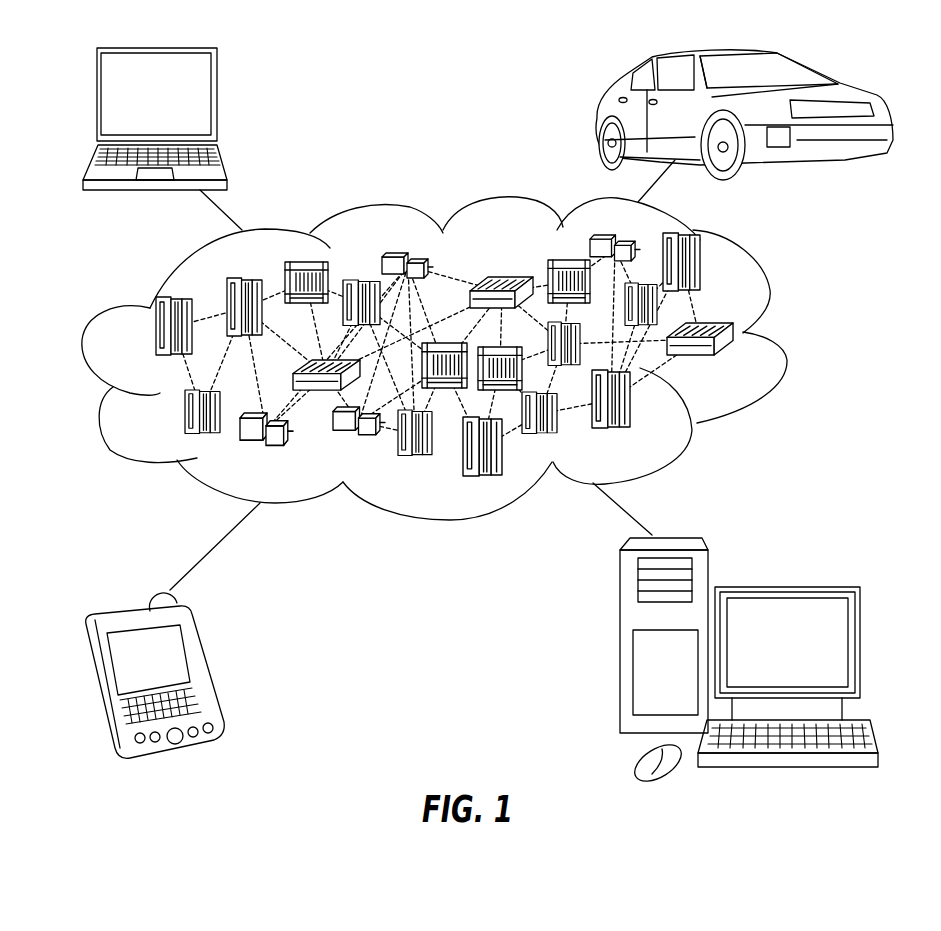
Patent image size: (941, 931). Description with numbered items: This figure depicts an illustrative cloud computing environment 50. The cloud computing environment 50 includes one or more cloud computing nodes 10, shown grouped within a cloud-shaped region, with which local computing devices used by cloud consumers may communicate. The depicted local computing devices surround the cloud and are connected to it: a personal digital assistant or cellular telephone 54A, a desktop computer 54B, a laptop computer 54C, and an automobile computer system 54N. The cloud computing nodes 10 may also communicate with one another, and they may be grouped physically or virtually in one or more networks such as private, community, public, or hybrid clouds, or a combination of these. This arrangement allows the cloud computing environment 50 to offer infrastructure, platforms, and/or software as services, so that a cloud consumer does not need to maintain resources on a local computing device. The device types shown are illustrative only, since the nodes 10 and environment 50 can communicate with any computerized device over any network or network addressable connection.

The cloud computing environment 50 is at (783, 336).
The cloud computing node 10 is at (743, 363).
The personal digital assistant (PDA) or cellular telephone 54A is at (208, 665).
The desktop computer 54B is at (785, 585).
The laptop computer 54C is at (217, 100).
The automobile computer system 54N is at (598, 104).